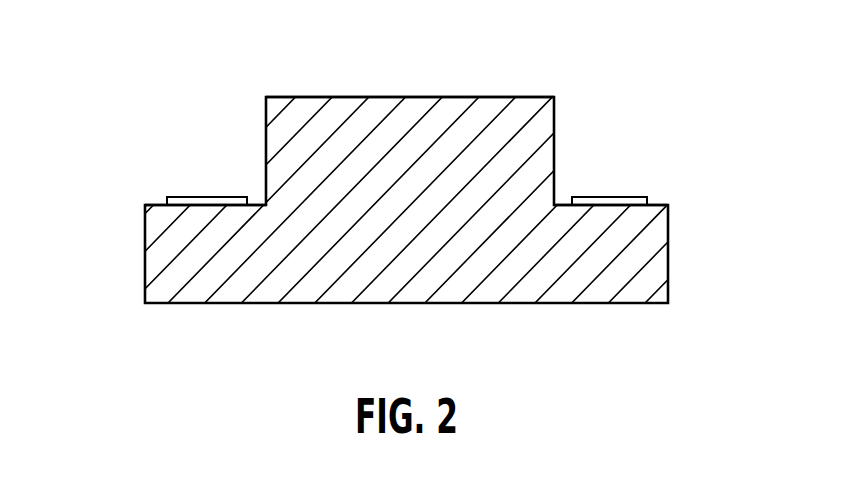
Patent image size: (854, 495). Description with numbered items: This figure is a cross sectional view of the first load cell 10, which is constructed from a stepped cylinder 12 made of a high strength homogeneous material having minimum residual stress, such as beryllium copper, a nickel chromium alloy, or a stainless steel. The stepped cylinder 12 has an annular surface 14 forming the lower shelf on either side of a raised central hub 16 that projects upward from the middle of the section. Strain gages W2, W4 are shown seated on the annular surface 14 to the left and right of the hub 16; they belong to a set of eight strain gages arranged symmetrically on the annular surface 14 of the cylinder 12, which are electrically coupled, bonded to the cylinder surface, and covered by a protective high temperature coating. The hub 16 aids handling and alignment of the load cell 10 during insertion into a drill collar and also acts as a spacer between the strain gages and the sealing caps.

The first load cell 10 is at (770, 23).
The stepped cylinder 12 is at (518, 113).
The annular surface 14 is at (157, 204).
The raised central hub 16 is at (362, 97).
The strain gage W2 is at (195, 198).
The strain gage W4 is at (613, 198).